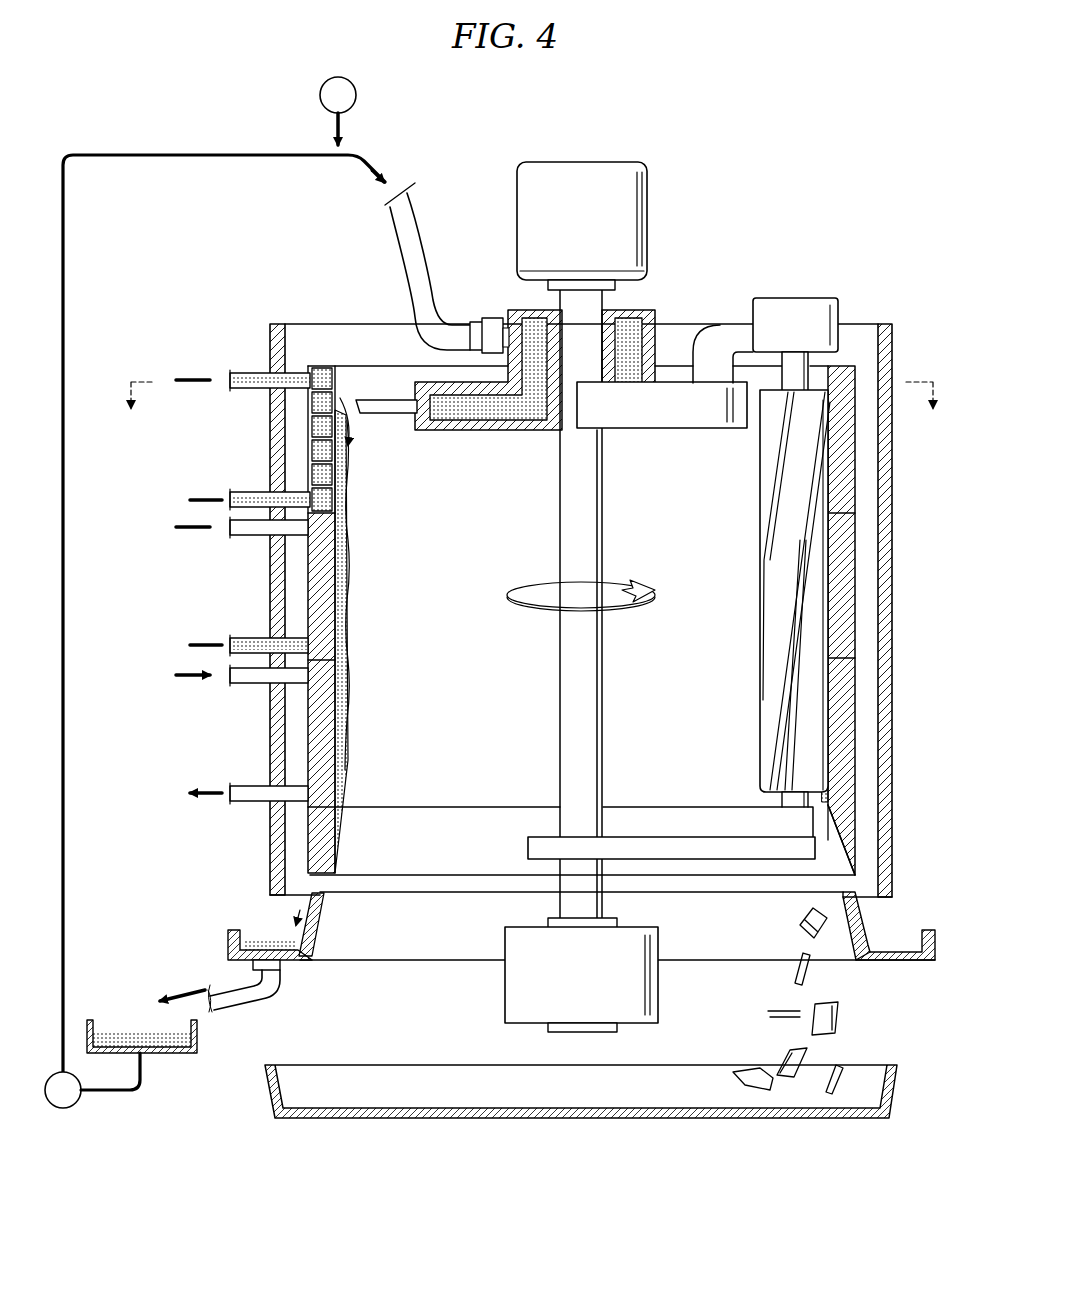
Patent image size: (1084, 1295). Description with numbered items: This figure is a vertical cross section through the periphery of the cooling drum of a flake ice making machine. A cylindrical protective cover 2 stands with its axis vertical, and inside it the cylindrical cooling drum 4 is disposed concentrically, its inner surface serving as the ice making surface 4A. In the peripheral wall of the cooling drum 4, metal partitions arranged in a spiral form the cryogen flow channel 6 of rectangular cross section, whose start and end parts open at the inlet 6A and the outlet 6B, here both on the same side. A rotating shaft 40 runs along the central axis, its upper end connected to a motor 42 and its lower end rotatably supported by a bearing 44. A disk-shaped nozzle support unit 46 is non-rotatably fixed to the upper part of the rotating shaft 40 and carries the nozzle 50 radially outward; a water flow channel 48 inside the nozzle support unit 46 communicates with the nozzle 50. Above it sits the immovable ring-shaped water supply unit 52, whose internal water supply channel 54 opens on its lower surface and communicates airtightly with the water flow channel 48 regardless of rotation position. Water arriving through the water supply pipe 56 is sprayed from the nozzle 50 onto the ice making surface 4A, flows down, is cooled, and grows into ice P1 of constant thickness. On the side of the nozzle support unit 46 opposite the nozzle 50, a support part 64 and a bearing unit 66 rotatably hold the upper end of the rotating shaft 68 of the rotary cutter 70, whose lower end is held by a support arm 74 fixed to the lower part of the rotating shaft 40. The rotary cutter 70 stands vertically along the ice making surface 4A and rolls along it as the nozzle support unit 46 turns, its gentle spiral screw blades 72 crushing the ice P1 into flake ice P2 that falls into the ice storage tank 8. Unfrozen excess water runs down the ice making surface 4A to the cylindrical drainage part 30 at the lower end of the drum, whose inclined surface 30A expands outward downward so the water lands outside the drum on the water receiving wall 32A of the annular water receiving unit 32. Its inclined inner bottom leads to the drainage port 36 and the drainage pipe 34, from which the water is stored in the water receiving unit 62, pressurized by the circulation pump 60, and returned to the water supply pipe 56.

The protective cover 2 is at (880, 372).
The cooling drum 4 is at (852, 462).
The ice making surface 4A is at (347, 590).
The cryogen flow channel 6 is at (325, 372).
The inlet 6A is at (262, 372).
The outlet 6B is at (260, 492).
The ice storage tank 8 is at (893, 1090).
The drainage part 30 is at (856, 836).
The inclined surface 30A is at (822, 806).
The water receiving unit 32 is at (932, 942).
The water receiving wall 32A is at (856, 922).
The drainage pipe 34 is at (245, 995).
The drainage port 36 is at (266, 948).
The rotating shaft 40 is at (597, 523).
The motor 42 is at (638, 164).
The bearing 44 is at (660, 1000).
The nozzle support unit 46 is at (668, 428).
The water flow channel 48 is at (500, 430).
The nozzle 50 is at (387, 412).
The water supply unit 52 is at (358, 96).
The water supply channel 54 is at (630, 355).
The water supply pipe 56 is at (428, 255).
The circulation pump 60 is at (70, 1105).
The water receiving unit 62 is at (165, 1055).
The support part 64 is at (733, 340).
The bearing unit 66 is at (805, 300).
The rotating shaft 68 is at (800, 382).
The rotary cutter 70 is at (762, 565).
The screw blades 72 is at (775, 595).
The support arm 74 is at (695, 838).
The ice P1 is at (350, 690).
The flake ice P2 is at (832, 1018).